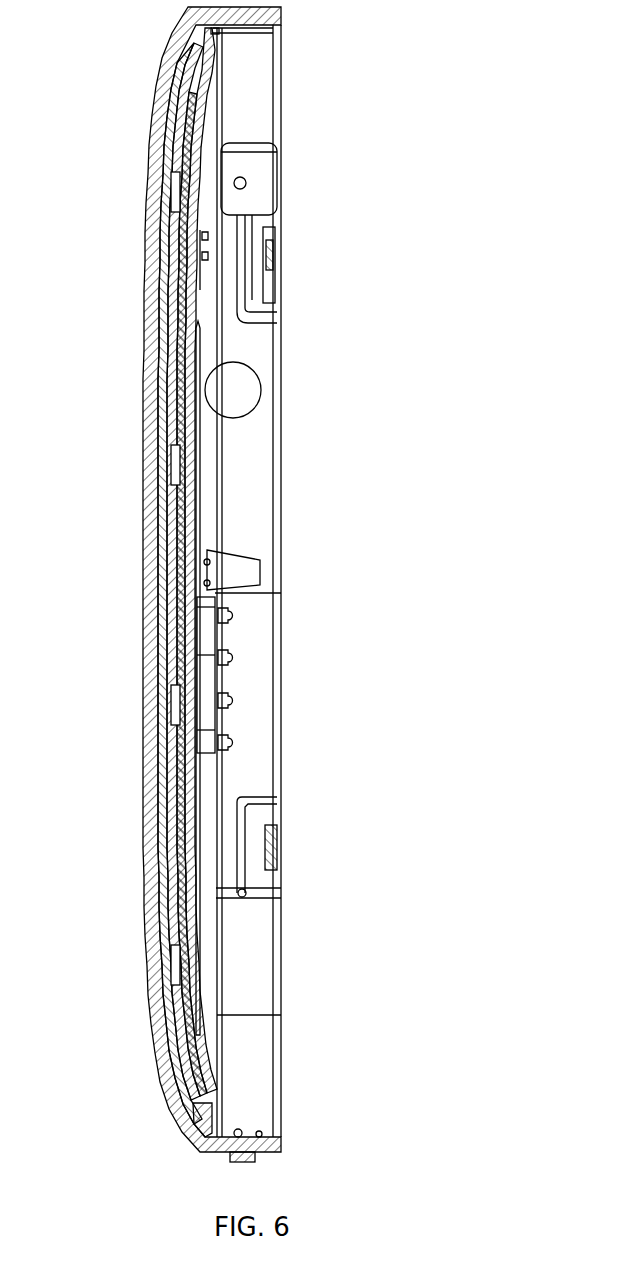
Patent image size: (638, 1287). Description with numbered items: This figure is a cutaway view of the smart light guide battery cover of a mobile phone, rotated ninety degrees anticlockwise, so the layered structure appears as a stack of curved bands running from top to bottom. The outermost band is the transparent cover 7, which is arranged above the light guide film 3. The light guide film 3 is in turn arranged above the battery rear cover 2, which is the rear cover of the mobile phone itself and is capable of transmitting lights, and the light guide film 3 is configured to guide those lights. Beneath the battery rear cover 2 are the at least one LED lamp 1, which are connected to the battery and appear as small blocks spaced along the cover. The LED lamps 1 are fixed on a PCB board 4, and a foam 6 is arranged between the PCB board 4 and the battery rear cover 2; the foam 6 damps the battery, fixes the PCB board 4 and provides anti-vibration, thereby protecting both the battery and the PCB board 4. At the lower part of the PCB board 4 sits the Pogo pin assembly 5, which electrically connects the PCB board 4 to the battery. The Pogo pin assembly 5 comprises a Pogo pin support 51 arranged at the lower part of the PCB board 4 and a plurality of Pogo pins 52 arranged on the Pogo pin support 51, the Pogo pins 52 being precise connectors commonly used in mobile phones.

The LED lamp 1 is at (175, 190).
The battery rear cover 2 is at (173, 832).
The light guide film 3 is at (158, 405).
The PCB board 4 is at (190, 518).
The Pogo pin assembly 5 is at (317, 675).
The Pogo pin support 51 is at (203, 635).
The Pogo pins 52 is at (225, 742).
The foam 6 is at (182, 313).
The transparent cover 7 is at (148, 330).